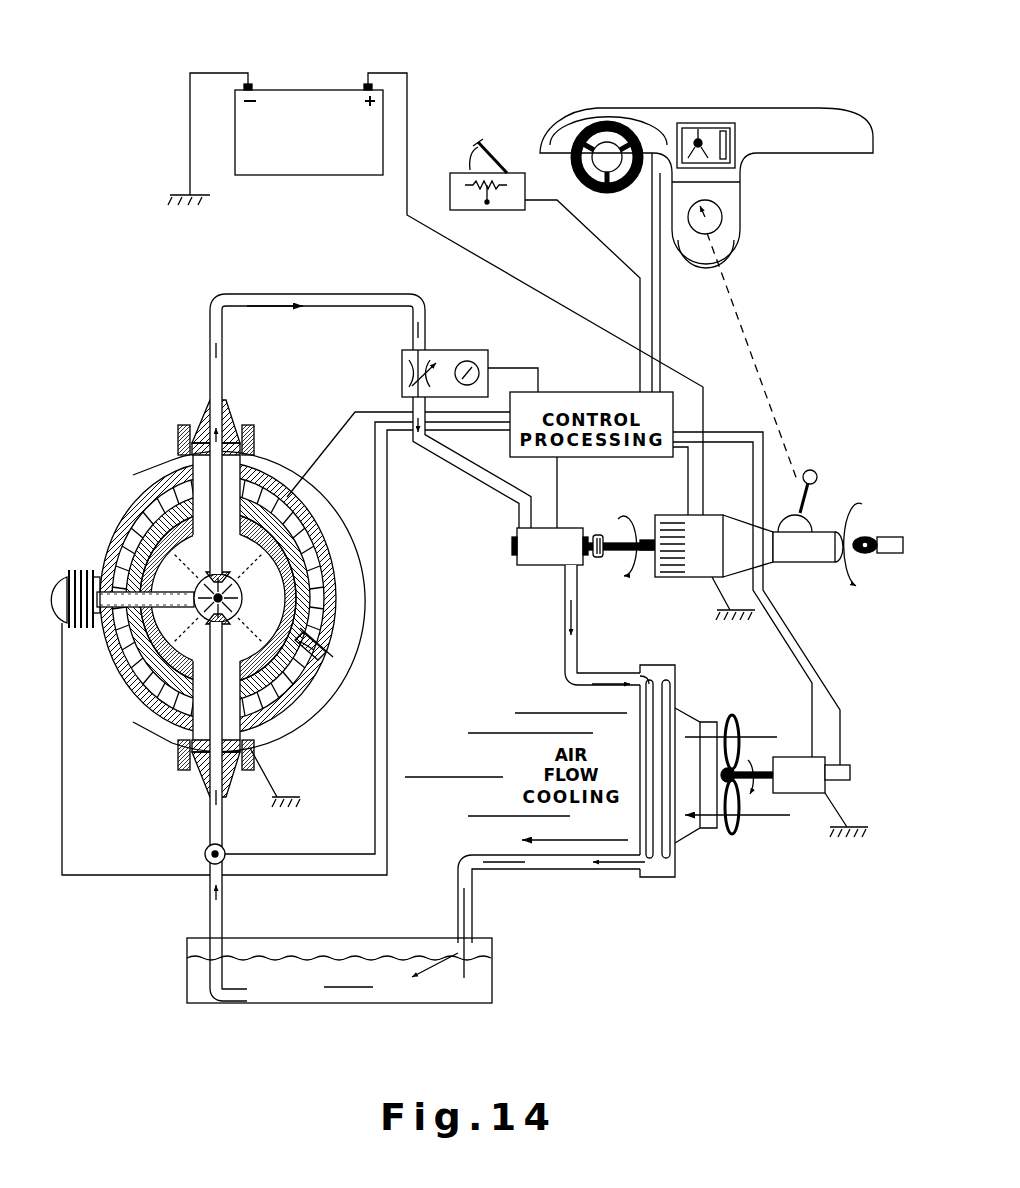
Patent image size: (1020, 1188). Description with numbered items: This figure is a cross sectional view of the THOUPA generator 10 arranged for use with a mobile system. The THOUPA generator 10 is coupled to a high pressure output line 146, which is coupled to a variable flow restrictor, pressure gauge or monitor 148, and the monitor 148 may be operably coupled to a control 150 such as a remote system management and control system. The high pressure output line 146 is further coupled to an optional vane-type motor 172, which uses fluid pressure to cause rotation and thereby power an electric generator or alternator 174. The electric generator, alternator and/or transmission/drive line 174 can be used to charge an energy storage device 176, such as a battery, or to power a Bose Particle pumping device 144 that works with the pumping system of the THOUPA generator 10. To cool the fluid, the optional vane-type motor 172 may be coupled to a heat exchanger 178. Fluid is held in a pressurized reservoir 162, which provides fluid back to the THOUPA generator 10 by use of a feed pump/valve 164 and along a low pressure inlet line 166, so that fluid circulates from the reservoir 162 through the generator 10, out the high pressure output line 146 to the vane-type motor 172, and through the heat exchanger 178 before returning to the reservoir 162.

The THOUPA generator 10 is at (130, 430).
The Bose Particle pumping device 144 is at (62, 573).
The high pressure output line 146 is at (343, 297).
The variable flow restrictor, pressure gauge or monitor 148 is at (400, 370).
The control 150 is at (673, 117).
The pressurized reservoir 162 is at (497, 965).
The feed pump/valve 164 is at (205, 850).
The low pressure inlet line 166 is at (207, 907).
The vane-type motor 172 is at (540, 565).
The electric generator or alternator 174 is at (792, 567).
The energy storage device 176 is at (335, 88).
The heat exchanger 178 is at (692, 835).